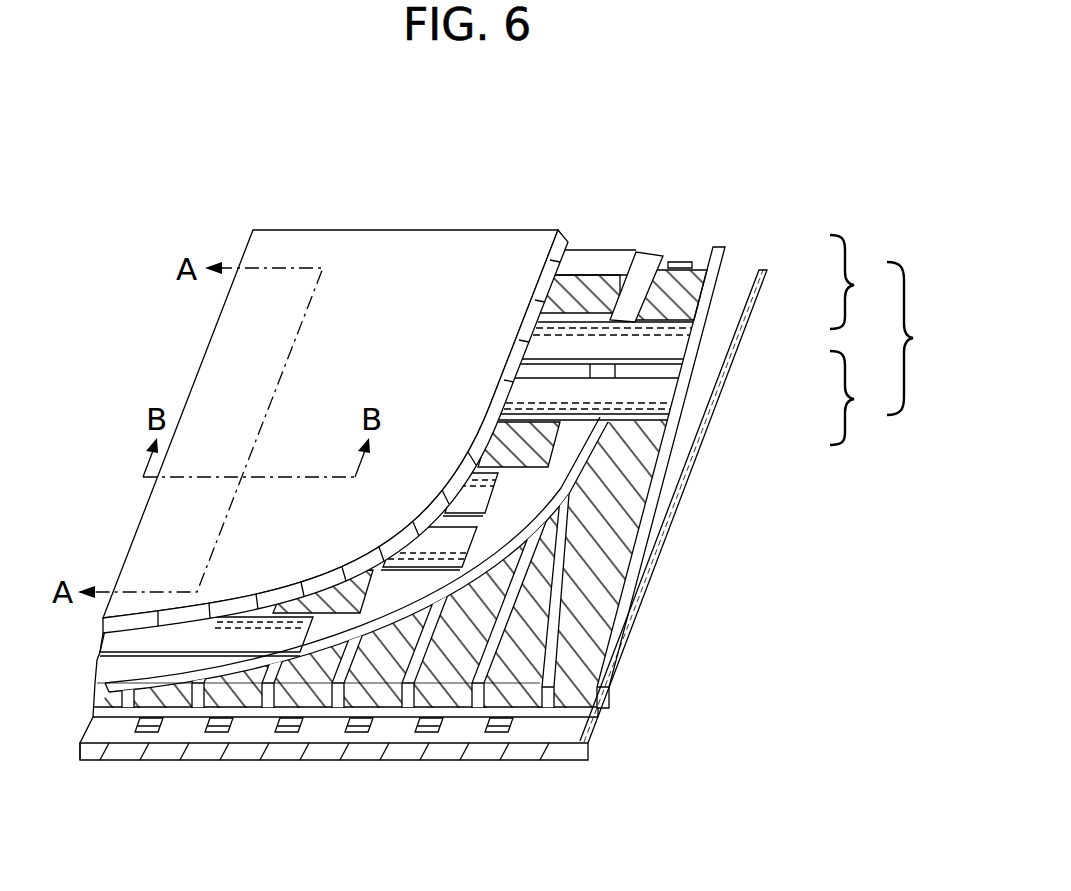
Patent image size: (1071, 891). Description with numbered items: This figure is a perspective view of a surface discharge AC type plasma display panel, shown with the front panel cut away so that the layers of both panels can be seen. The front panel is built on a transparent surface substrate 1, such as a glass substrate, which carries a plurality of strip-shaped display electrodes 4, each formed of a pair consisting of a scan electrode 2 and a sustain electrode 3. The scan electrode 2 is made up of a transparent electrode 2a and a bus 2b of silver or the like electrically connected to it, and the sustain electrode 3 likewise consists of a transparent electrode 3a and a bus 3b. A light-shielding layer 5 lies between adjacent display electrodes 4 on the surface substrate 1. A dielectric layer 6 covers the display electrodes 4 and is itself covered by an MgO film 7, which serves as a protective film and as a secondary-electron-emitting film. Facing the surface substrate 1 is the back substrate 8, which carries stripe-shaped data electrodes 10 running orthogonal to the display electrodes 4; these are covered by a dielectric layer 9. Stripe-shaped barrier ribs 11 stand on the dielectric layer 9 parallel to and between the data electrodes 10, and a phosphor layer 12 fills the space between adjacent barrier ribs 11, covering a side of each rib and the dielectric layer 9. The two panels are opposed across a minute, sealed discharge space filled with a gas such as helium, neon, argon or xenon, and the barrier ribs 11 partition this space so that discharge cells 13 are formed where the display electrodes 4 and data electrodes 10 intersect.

The surface substrate 1 is at (405, 228).
The scan electrode 2 is at (701, 306).
The transparent electrode 2a is at (680, 330).
The bus 2b is at (660, 350).
The sustain electrode 3 is at (690, 399).
The transparent electrode 3a is at (648, 395).
The bus 3b is at (648, 410).
The display electrode 4 is at (721, 341).
The light-shielding layer 5 is at (540, 450).
The dielectric layer 6 is at (588, 248).
The MgO film 7 is at (655, 255).
The back substrate 8 is at (540, 755).
The dielectric layer 9 is at (650, 520).
The data electrode 10 is at (495, 735).
The barrier rib 11 is at (500, 633).
The phosphor layer 12 is at (530, 665).
The discharge cell 13 is at (150, 695).